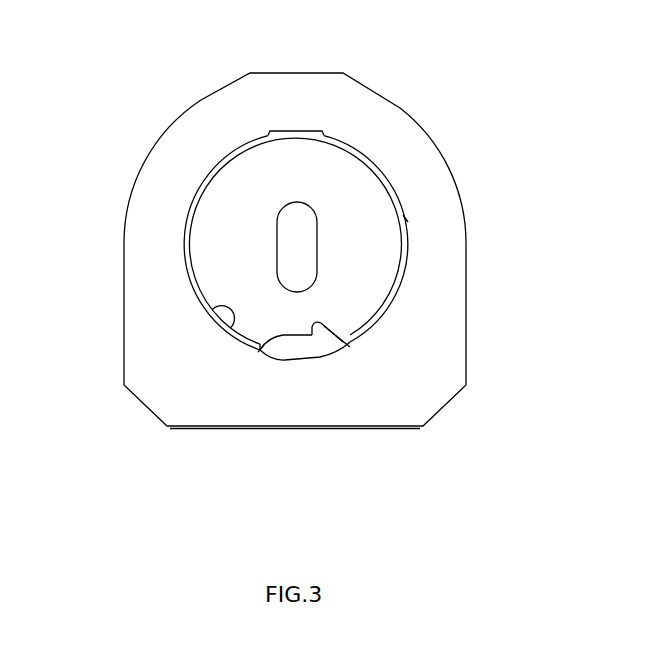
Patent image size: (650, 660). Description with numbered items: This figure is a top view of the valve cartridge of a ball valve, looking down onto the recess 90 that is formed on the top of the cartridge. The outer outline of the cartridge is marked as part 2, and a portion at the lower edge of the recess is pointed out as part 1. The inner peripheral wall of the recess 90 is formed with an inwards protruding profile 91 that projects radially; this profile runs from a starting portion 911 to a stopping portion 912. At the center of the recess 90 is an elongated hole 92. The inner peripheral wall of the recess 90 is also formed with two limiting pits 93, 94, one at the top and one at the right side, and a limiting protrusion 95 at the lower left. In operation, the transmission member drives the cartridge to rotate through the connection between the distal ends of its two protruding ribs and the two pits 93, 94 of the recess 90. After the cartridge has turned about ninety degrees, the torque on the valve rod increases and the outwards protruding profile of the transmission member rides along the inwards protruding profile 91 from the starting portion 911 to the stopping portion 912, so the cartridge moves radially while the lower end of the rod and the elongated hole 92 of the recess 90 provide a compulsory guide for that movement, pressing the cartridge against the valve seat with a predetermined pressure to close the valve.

The positioning plate body 1 is at (358, 341).
The positioning member 2 is at (254, 234).
The recess 90 is at (222, 263).
The inwards protruding profile 91 is at (298, 333).
The starting portion 911 is at (264, 346).
The stopping portion 912 is at (315, 332).
The elongated hole 92 is at (300, 222).
The limiting pit 93 is at (267, 138).
The limiting pit 94 is at (405, 218).
The limiting protrusion 95 is at (218, 318).